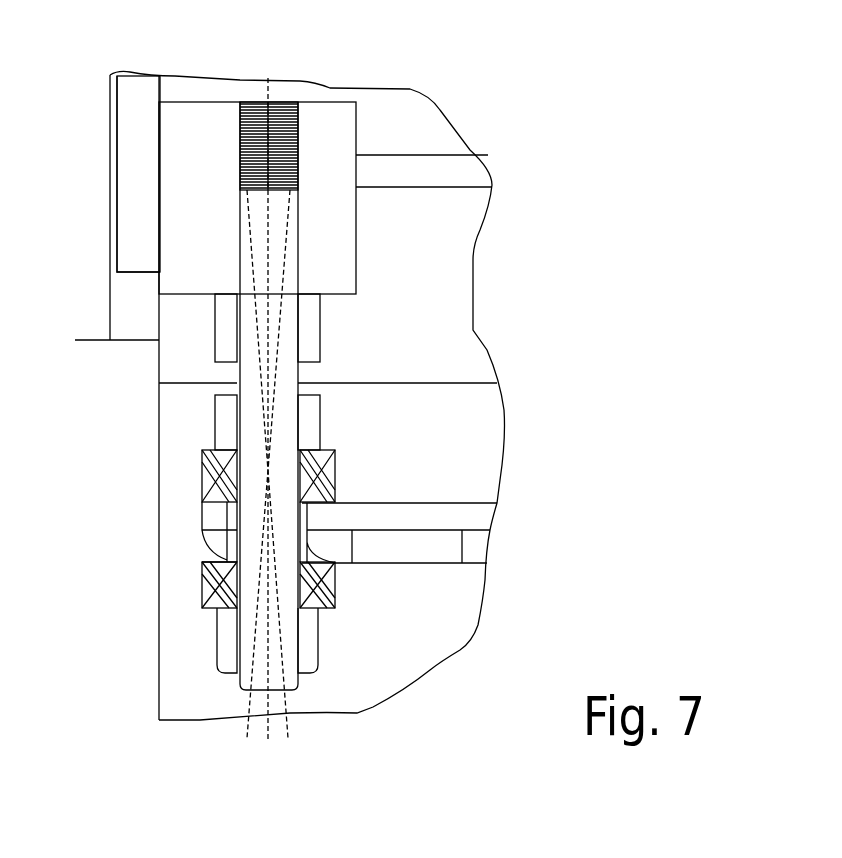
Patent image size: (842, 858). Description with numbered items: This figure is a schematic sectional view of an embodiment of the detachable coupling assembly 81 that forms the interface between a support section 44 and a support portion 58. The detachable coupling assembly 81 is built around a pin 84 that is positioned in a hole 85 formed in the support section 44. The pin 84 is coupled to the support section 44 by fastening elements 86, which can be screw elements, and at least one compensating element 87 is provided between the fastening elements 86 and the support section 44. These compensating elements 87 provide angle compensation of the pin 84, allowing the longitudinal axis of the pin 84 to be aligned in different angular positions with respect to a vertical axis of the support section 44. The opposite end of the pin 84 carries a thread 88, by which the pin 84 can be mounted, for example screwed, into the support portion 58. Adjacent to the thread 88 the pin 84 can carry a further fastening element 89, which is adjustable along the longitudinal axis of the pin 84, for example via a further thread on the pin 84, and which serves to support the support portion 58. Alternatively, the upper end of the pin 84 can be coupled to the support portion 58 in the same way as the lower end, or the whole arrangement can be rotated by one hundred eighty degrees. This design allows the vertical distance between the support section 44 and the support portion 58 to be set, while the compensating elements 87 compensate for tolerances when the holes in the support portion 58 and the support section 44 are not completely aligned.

The support section 44 is at (357, 503).
The support portion 58 is at (187, 197).
The detachable coupling assembly 81 is at (470, 342).
The pin 84 is at (247, 375).
The hole 85 is at (335, 563).
The fastening elements 86 is at (312, 428).
The compensating element 87 is at (196, 466).
The thread 88 is at (300, 128).
The further fastening element 89 is at (213, 330).